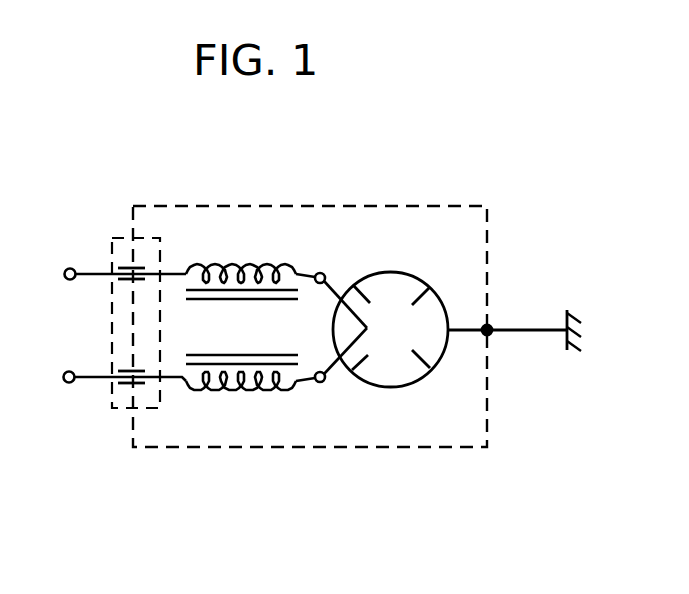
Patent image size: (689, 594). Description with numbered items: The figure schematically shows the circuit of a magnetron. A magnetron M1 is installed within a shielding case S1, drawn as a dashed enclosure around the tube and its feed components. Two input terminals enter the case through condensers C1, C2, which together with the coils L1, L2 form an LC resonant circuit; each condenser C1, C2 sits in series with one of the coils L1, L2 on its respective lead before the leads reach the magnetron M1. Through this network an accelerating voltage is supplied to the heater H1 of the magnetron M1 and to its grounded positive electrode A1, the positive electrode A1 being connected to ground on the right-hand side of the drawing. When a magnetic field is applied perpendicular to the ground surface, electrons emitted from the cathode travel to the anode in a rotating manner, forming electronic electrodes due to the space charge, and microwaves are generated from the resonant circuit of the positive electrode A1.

The shielding case S1 is at (359, 196).
The condenser C1 is at (128, 268).
The condenser C2 is at (125, 385).
The first choke coil L1 is at (233, 263).
The second choke coil L2 is at (248, 390).
The magnetron M1 is at (443, 306).
The heater H1 is at (357, 338).
The positive electrode A1 is at (438, 360).